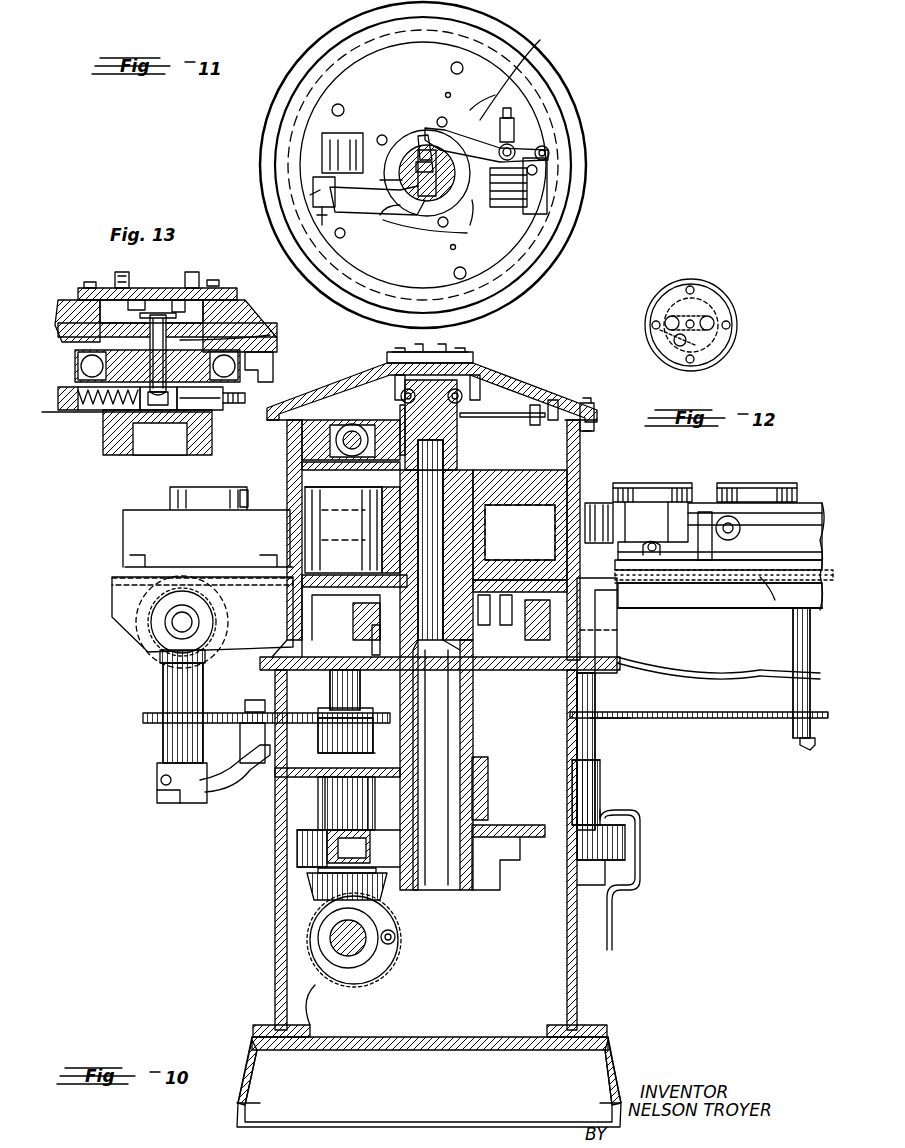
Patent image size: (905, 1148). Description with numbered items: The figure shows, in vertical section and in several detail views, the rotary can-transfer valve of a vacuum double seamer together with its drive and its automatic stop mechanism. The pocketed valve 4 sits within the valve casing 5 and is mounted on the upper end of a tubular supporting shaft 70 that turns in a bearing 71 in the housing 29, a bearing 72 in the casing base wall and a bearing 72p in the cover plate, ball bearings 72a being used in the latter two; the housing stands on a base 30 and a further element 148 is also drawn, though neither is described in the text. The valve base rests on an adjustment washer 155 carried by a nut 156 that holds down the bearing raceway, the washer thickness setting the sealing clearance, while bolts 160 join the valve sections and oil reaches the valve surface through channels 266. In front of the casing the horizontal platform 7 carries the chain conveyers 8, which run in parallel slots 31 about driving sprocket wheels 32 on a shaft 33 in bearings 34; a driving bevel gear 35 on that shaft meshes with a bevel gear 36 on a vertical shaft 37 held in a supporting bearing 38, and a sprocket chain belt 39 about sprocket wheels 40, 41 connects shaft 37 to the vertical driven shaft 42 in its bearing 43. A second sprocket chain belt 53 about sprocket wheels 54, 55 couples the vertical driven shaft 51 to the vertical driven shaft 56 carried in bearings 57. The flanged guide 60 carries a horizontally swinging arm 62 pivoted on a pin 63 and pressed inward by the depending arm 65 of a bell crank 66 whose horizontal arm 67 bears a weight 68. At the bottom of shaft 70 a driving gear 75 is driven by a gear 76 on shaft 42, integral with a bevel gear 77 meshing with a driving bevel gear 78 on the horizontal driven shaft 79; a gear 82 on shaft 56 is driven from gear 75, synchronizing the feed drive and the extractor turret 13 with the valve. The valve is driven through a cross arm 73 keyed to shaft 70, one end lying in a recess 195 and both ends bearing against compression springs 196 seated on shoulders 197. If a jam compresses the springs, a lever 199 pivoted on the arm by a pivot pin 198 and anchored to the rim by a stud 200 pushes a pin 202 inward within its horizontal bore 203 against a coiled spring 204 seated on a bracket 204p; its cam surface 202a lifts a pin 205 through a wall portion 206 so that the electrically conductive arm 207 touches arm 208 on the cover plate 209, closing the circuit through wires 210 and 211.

In FIG. 11, the valve 4 is at (398, 265).
In FIG. 11, the valve casing 5 is at (588, 115).
In FIG. 10, the valve casing 5 is at (580, 460).
In FIG. 10, the horizontal platform 7 is at (685, 600).
In FIG. 10, the chain conveyers 8 is at (262, 590).
In FIG. 10, the extractor turret 13 is at (431, 510).
In FIG. 10, the housing 29 is at (600, 775).
In FIG. 10, the base 30 is at (610, 1050).
In FIG. 10, the parallel slots 31 is at (635, 575).
In FIG. 10, the driving sprocket wheels 32 is at (228, 628).
In FIG. 10, the shaft 33 is at (160, 622).
In FIG. 10, the bearings 34 is at (170, 610).
In FIG. 10, the driving bevel gear 35 is at (175, 622).
In FIG. 10, the bevel gear 36 is at (160, 657).
In FIG. 10, the vertical shaft 37 is at (185, 803).
In FIG. 10, the supporting bearing 38 is at (160, 690).
In FIG. 10, the sprocket chain belt 39 is at (268, 760).
In FIG. 10, the sprocket wheel 40 is at (150, 723).
In FIG. 10, the sprocket wheel 41 is at (318, 735).
In FIG. 10, the vertical driven shaft 42 is at (325, 695).
In FIG. 10, the bearing 43 is at (300, 820).
In FIG. 10, the vertical driven shaft 51 is at (812, 750).
In FIG. 10, the sprocket chain belt 53 is at (690, 722).
In FIG. 10, the sprocket wheel 54 is at (795, 738).
In FIG. 10, the sprocket wheel 55 is at (600, 722).
In FIG. 10, the vertical driven shaft 56 is at (620, 630).
In FIG. 10, the bearings 57 is at (597, 700).
In FIG. 10, the flanged guide 60 is at (775, 591).
In FIG. 10, the horizontally swinging arm 62 is at (790, 503).
In FIG. 10, the pin 63 is at (685, 502).
In FIG. 10, the depending arm 65 is at (712, 555).
In FIG. 10, the bell crank 66 is at (745, 545).
In FIG. 10, the horizontal arm 67 is at (730, 516).
In FIG. 10, the weight 68 is at (715, 580).
In FIG. 11, the tubular supporting shaft 70 is at (430, 200).
In FIG. 10, the tubular supporting shaft 70 is at (465, 690).
In FIG. 10, the bearing 71 is at (488, 800).
In FIG. 10, the bearing 72 is at (505, 640).
In FIG. 10, the anti-friction ball bearings 72a is at (353, 610).
In FIG. 13, the bearing 72p is at (273, 360).
In FIG. 10, the bearing 72p is at (397, 380).
In FIG. 11, the cross arm 73 is at (395, 215).
In FIG. 10, the driving gear 75 is at (480, 860).
In FIG. 10, the gear 76 is at (297, 845).
In FIG. 10, the bevel gear 77 is at (308, 880).
In FIG. 10, the driving bevel gear 78 is at (400, 925).
In FIG. 10, the horizontal driven shaft 79 is at (360, 960).
In FIG. 10, the gear 82 is at (625, 840).
In FIG. 10, the ball bearing 148 is at (460, 392).
In FIG. 10, the adjustment washer 155 is at (330, 560).
In FIG. 10, the nut 156 is at (340, 587).
In FIG. 10, the bolts 160 is at (592, 420).
In FIG. 11, the recess 195 is at (315, 190).
In FIG. 10, the recess 195 is at (320, 412).
In FIG. 11, the compression springs 196 is at (325, 150).
In FIG. 10, the compression springs 196 is at (330, 445).
In FIG. 11, the shoulders 197 is at (350, 128).
In FIG. 11, the pivot pin 198 is at (505, 120).
In FIG. 11, the lever 199 is at (462, 145).
In FIG. 10, the lever 199 is at (500, 412).
In FIG. 11, the stud 200 is at (548, 152).
In FIG. 10, the stud 200 is at (556, 402).
In FIG. 11, the pin 202 is at (422, 140).
In FIG. 13, the pin 202 is at (205, 410).
In FIG. 11, the cam surface 202a is at (372, 207).
In FIG. 13, the cam surface 202a is at (270, 335).
In FIG. 11, the horizontal bore 203 is at (540, 40).
In FIG. 13, the horizontal bore 203 is at (110, 300).
In FIG. 12, the horizontal bore 203 is at (705, 300).
In FIG. 11, the coiled spring 204 is at (440, 268).
In FIG. 13, the coiled spring 204 is at (100, 415).
In FIG. 13, the bracket 204p is at (68, 387).
In FIG. 13, the pin 205 is at (75, 355).
In FIG. 10, the pin 205 is at (468, 352).
In FIG. 13, the wall portion 206 is at (78, 296).
In FIG. 13, the electrically conductive arm 207 is at (240, 300).
In FIG. 12, the electrically conductive arm 207 is at (720, 340).
In FIG. 13, the arm 208 is at (200, 288).
In FIG. 12, the arm 208 is at (660, 320).
In FIG. 13, the cover plate 209 is at (90, 282).
In FIG. 12, the cover plate 209 is at (715, 305).
In FIG. 13, the circuit wire 210 is at (215, 282).
In FIG. 13, the circuit wire 211 is at (165, 300).
In FIG. 10, the channels 266 is at (590, 503).